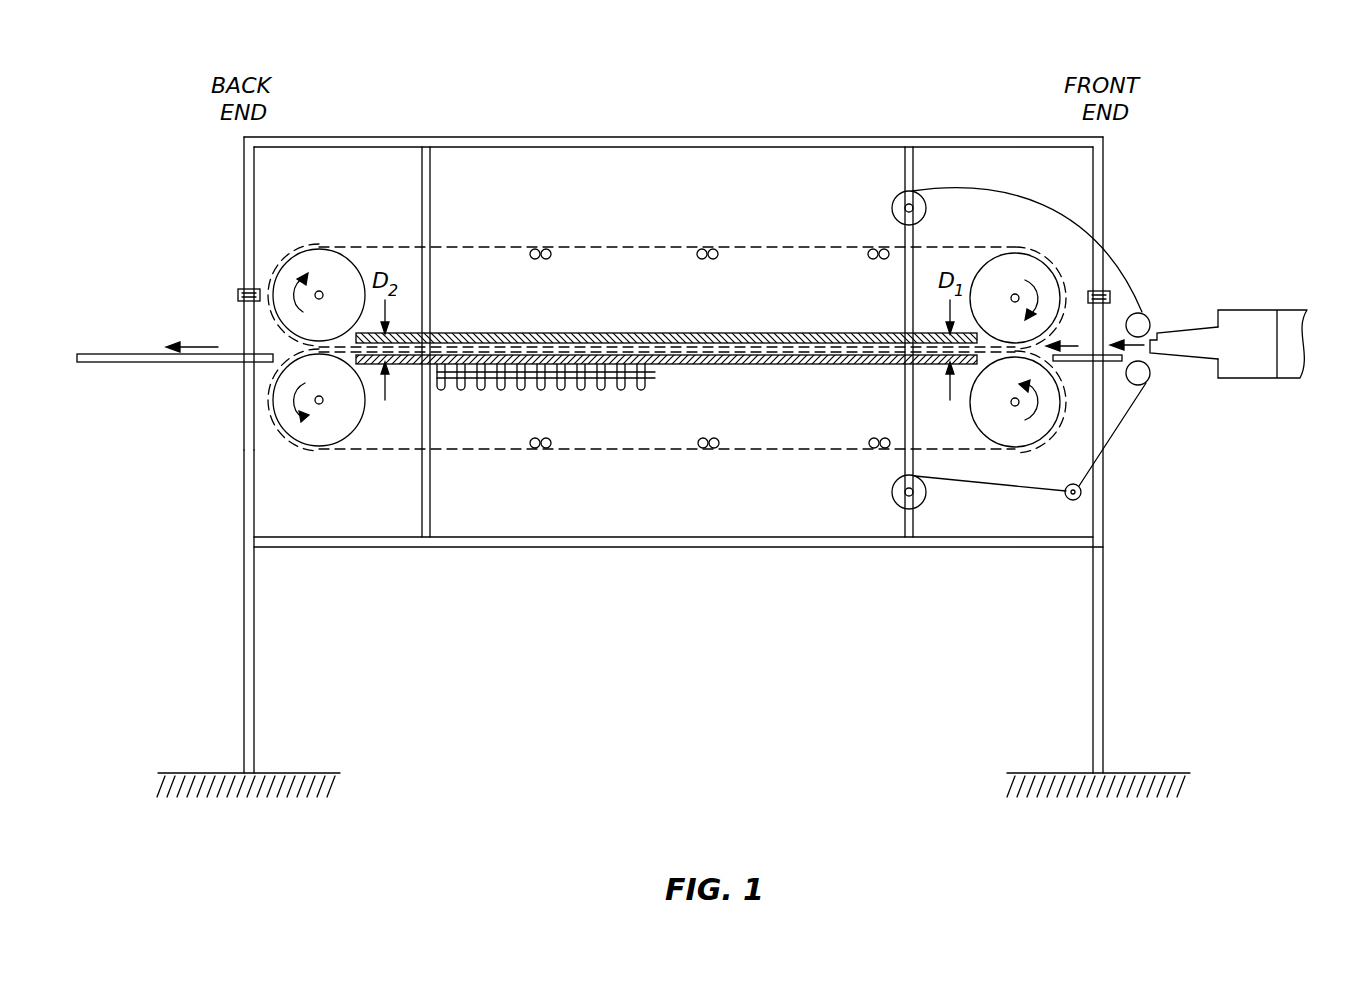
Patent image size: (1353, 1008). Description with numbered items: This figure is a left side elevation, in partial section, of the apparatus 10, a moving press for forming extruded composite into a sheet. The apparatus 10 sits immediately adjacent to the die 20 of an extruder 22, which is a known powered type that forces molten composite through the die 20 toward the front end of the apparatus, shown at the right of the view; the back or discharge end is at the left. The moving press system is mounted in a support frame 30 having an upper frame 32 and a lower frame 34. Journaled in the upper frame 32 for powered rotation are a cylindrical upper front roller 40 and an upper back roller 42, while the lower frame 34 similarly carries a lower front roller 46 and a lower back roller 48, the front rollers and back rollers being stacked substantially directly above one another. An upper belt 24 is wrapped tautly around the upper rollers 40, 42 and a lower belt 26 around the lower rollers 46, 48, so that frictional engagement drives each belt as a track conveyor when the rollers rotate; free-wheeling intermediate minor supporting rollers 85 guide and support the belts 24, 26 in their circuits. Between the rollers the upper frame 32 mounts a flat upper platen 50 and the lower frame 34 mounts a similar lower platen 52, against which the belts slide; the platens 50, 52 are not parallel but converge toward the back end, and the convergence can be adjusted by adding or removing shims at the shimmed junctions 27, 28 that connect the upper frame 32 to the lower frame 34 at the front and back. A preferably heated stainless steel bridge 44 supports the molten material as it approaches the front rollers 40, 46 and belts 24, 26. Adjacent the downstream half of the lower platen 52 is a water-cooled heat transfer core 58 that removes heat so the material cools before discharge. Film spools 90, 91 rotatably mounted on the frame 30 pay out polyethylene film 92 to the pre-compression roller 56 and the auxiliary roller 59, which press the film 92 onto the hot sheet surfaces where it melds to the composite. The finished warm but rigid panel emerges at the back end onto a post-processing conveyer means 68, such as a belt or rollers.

The apparatus 10 is at (787, 118).
The die 20 is at (1168, 328).
The extruder 22 is at (1250, 378).
The upper belt 24 is at (468, 248).
The lower belt 26 is at (602, 452).
The shimmed junction 27 is at (1104, 290).
The shimmed junction 28 is at (244, 296).
The frame 30 is at (533, 115).
The upper frame 32 is at (246, 222).
The lower frame 34 is at (246, 460).
The upper front roller 40 is at (1015, 254).
The upper back roller 42 is at (320, 258).
The bridge 44 is at (1080, 362).
The lower front roller 46 is at (1015, 444).
The lower back roller 48 is at (318, 447).
The upper platen 50 is at (640, 337).
The lower platen 52 is at (806, 365).
The pre-compression roller 56 is at (1140, 313).
The heat transfer core 58 is at (522, 391).
The auxiliary roller 59 is at (1150, 378).
The post-processing conveyer means 68 is at (181, 364).
The intermediate minor supporting rollers 85 is at (708, 250).
The film spool 90 is at (893, 204).
The film spool 91 is at (893, 497).
The polyethylene film 92 is at (1092, 200).